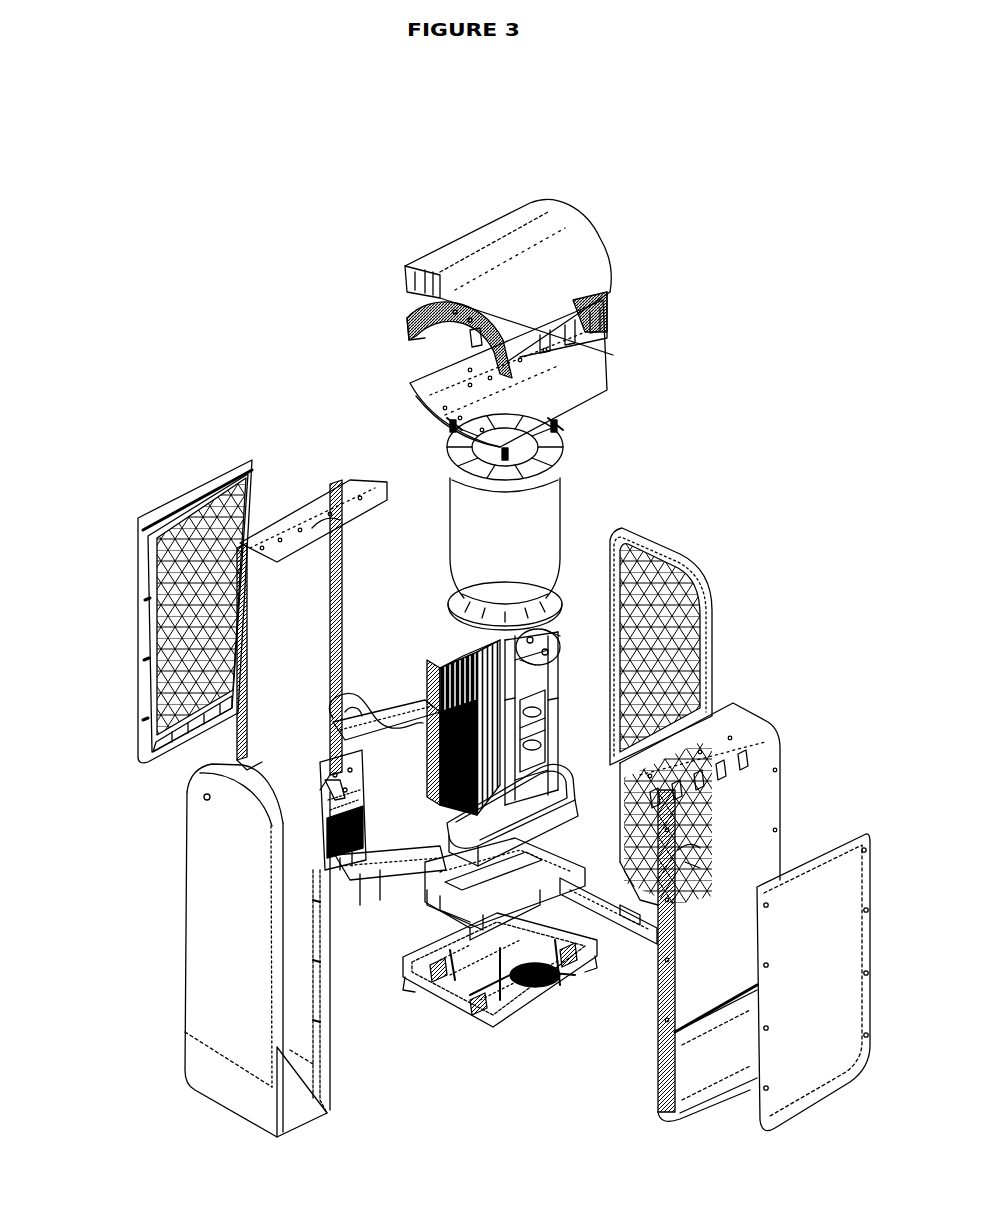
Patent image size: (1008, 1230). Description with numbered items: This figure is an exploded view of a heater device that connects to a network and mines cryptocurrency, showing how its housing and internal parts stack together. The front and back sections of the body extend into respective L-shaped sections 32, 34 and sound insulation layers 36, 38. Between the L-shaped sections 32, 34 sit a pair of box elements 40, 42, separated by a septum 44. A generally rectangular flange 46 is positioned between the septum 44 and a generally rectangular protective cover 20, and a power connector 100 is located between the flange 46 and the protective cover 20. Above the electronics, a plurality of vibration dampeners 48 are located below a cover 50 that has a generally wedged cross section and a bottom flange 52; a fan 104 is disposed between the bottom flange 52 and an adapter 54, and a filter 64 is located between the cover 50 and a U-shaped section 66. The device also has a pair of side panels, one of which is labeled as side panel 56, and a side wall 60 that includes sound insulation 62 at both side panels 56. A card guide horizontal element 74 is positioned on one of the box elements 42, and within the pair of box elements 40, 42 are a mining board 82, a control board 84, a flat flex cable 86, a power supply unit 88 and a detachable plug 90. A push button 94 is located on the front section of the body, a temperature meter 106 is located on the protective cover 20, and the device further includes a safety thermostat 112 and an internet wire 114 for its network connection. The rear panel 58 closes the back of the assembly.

The protective cover 20 is at (565, 852).
The L-shaped section 32 is at (713, 662).
The L-shaped section 34 is at (183, 973).
The sound insulation layer 36 is at (702, 609).
The sound insulation layer 38 is at (263, 777).
The box element 40 is at (560, 721).
The box element 42 is at (333, 720).
The septum 44 is at (443, 668).
The flange 46 is at (553, 795).
The vibration dampeners 48 is at (453, 423).
The cover 50 is at (603, 348).
The bottom flange 52 is at (567, 443).
The adapter 54 is at (548, 597).
The side panel 56 is at (779, 752).
The rear panel 58 is at (757, 977).
The side wall 60 is at (188, 484).
The sound insulation 62 is at (237, 463).
The filter 64 is at (603, 306).
The U-shaped section 66 is at (608, 288).
The card guide horizontal element 74 is at (313, 813).
The mining board 82 is at (423, 723).
The control board 84 is at (320, 797).
The flat flex cable 86 is at (307, 833).
The power supply unit 88 is at (500, 720).
The detachable plug 90 is at (552, 840).
The push button 94 is at (204, 797).
The power connector 100 is at (558, 852).
The fan 104 is at (557, 578).
The temperature meter 106 is at (410, 953).
The safety thermostat 112 is at (527, 642).
The internet wire 114 is at (440, 897).